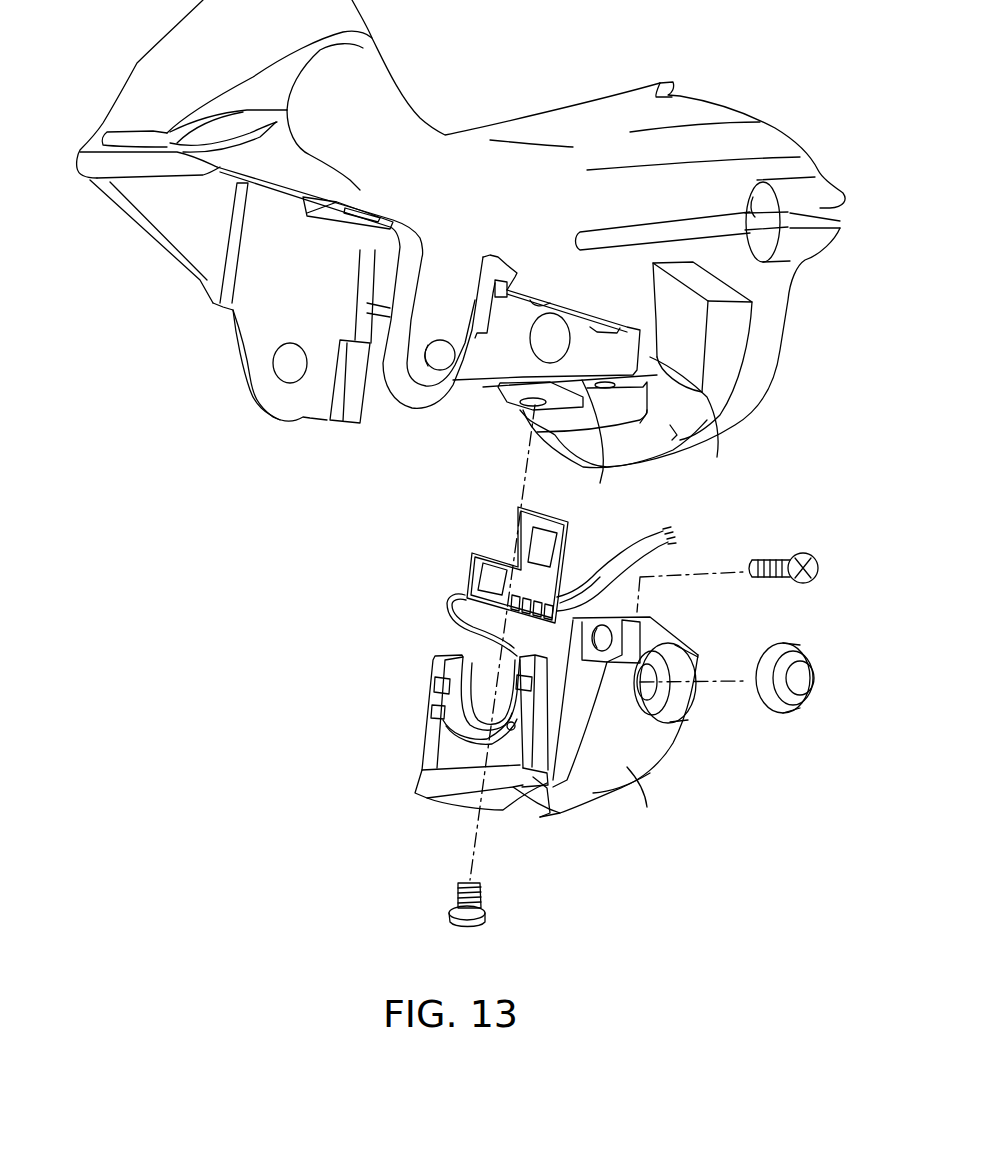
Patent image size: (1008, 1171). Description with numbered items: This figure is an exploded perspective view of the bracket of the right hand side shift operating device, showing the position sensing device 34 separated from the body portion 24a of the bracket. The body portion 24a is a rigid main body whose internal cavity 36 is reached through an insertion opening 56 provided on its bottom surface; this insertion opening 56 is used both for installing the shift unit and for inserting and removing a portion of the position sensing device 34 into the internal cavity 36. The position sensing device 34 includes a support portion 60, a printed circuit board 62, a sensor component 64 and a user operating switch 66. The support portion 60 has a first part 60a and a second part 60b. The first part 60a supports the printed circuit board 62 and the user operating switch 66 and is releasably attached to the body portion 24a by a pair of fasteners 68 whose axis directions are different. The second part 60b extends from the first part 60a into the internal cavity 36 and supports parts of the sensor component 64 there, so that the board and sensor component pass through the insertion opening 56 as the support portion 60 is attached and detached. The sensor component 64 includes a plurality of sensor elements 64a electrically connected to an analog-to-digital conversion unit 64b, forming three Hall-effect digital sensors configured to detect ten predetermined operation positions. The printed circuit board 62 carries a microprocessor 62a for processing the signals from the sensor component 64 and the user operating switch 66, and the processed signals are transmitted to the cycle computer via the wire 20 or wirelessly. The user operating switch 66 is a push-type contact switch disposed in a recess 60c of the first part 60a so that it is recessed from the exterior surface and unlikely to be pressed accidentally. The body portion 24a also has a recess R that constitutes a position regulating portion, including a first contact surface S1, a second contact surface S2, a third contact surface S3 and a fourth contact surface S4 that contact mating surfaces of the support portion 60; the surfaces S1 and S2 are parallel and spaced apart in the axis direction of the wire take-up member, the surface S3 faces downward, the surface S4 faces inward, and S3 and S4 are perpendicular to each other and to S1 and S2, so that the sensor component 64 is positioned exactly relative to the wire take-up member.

The body portion 24a is at (533, 128).
The insertion opening 56 is at (545, 306).
The internal cavity 36 is at (490, 362).
The fourth contact surface S4 is at (680, 326).
The first contact surface S1 is at (725, 333).
The recess R is at (724, 365).
The second contact surface S2 is at (692, 414).
The third contact surface S3 is at (601, 441).
The printed circuit board 62 is at (505, 518).
The microprocessor 62a is at (542, 548).
The analog-to-digital conversion unit 64b is at (497, 578).
The wire 20 is at (602, 564).
The position sensing device 34 is at (390, 598).
The sensor component 64 is at (433, 749).
The sensor elements 64a is at (433, 715).
The second part 60b is at (435, 666).
The support portion 60 is at (680, 759).
The first part 60a is at (651, 799).
The recess 60c is at (678, 658).
The fasteners 68 is at (803, 553).
The user operating switch 66 is at (810, 698).